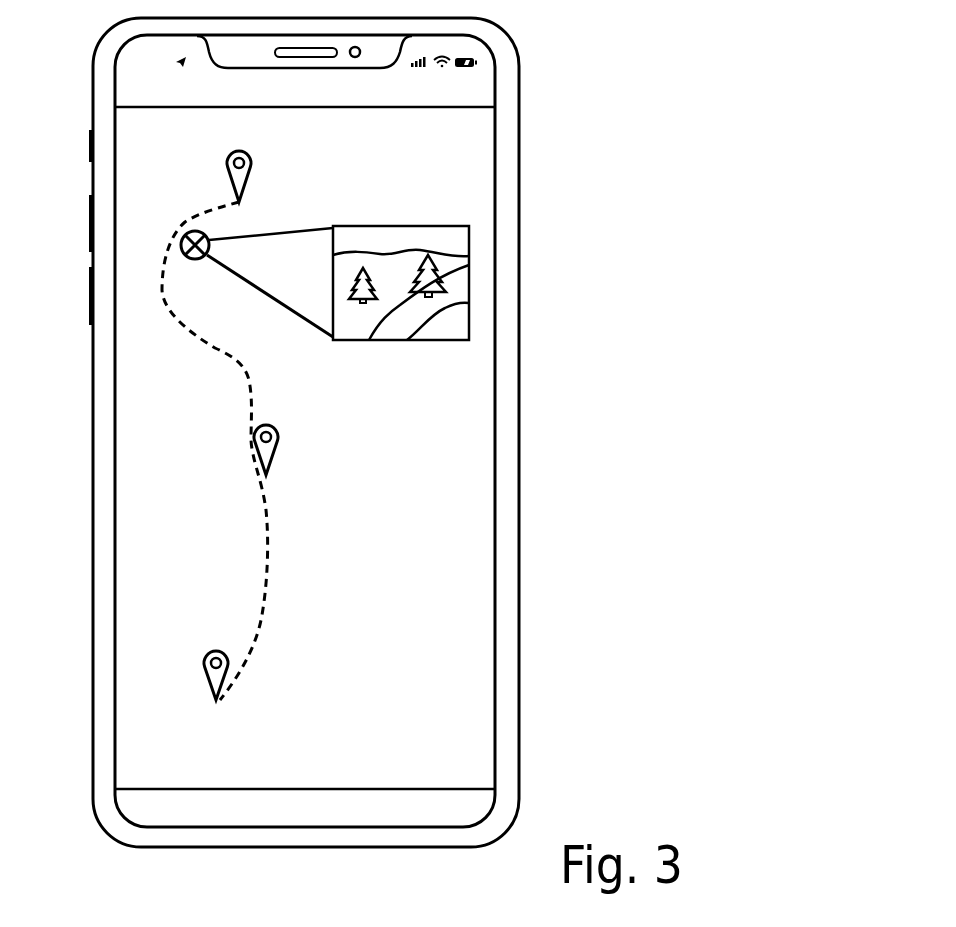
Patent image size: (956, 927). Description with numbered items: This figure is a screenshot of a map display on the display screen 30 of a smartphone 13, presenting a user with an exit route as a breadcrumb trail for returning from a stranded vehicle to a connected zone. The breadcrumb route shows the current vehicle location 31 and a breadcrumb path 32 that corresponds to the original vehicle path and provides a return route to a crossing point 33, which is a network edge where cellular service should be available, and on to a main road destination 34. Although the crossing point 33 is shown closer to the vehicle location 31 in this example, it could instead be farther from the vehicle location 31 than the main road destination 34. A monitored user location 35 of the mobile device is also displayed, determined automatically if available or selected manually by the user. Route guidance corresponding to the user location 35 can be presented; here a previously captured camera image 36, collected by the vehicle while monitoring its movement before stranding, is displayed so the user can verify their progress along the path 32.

The smartphone 13 is at (586, 78).
The display screen 30 is at (437, 648).
The current vehicle location 31 is at (232, 190).
The breadcrumb path 32 is at (235, 353).
The crossing point 33 is at (261, 463).
The main road destination 34 is at (210, 689).
The monitored user location 35 is at (191, 258).
The previously captured camera image 36 is at (472, 238).